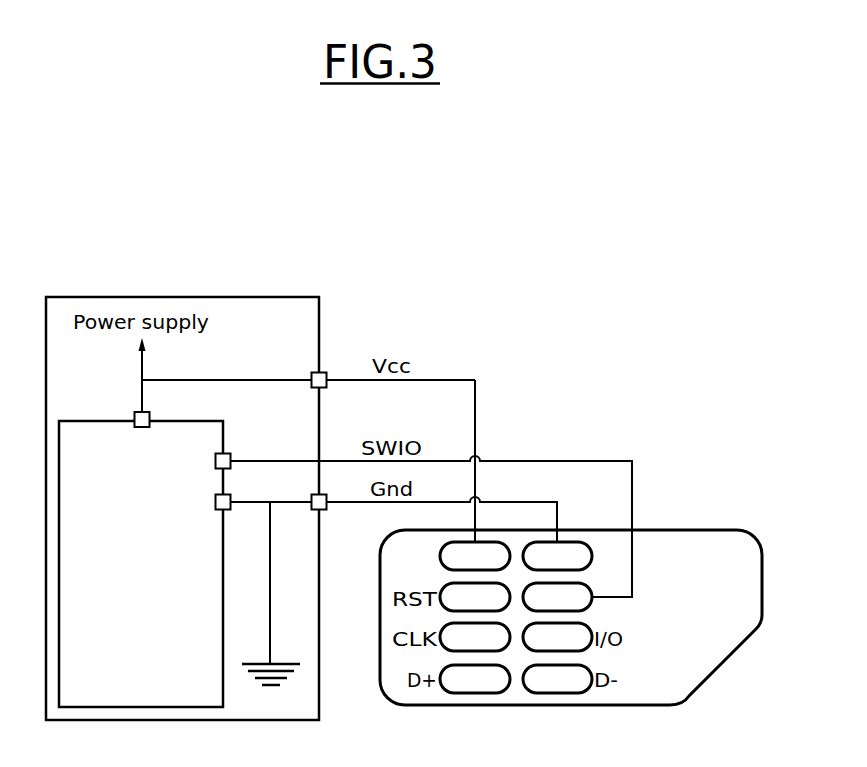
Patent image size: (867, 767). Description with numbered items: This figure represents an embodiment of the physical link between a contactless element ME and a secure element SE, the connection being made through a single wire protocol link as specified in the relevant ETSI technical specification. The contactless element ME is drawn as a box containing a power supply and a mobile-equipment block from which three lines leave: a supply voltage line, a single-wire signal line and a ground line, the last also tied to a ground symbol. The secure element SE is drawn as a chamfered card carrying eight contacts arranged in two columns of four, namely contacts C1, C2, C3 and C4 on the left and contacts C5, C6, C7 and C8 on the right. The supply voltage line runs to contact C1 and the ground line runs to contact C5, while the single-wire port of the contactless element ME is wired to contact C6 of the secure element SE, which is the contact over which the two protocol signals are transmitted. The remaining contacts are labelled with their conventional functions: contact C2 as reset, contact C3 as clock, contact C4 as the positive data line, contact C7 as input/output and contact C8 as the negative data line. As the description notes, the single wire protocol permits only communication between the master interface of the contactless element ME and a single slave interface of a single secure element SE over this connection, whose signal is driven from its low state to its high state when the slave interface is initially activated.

The contactless element ME is at (141, 564).
The secure element SE is at (571, 617).
The contact C1 is at (475, 556).
The contact C2 is at (475, 597).
The contact C3 is at (475, 637).
The contact C4 is at (475, 679).
The contact C5 is at (557, 556).
The contact C6 is at (557, 597).
The contact C7 is at (557, 637).
The contact C8 is at (557, 679).